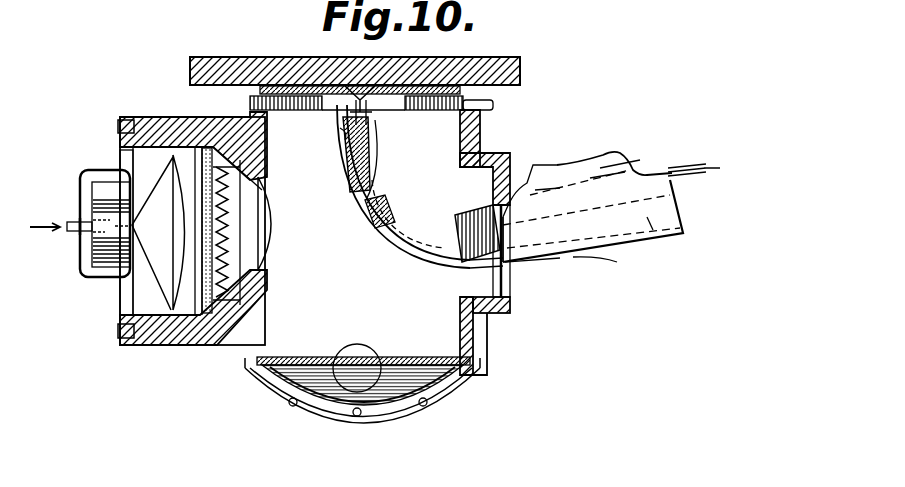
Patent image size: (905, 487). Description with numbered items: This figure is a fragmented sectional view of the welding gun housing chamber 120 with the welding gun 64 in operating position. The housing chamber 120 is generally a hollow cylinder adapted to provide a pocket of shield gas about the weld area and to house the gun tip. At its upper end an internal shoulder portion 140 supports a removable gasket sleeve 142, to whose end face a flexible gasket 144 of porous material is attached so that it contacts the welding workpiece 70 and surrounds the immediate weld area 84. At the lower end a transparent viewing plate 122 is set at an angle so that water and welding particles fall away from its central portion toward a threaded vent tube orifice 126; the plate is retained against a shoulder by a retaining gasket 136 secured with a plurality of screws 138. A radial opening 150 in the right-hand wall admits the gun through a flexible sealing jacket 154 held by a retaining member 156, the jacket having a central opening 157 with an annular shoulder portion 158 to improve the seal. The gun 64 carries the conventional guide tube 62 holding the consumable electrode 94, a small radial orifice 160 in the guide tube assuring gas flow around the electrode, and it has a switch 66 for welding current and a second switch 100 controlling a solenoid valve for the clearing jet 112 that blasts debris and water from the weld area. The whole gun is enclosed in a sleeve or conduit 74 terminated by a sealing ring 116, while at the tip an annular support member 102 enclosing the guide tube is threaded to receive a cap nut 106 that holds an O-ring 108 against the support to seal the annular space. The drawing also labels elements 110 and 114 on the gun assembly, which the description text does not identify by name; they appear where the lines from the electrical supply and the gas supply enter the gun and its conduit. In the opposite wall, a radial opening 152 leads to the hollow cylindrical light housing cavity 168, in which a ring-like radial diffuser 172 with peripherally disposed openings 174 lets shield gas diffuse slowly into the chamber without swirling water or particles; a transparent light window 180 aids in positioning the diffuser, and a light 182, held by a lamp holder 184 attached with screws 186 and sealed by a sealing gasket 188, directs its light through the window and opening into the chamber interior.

The welding workpiece 70 is at (355, 48).
The flexible gasket 144 is at (272, 88).
The weld area 84 is at (355, 92).
The gasket sleeve 142 is at (413, 112).
The internal shoulder portion 140 is at (254, 114).
The light housing cavity 168 is at (176, 346).
The sealing gasket 188 is at (132, 120).
The screws 186 is at (122, 123).
The lamp holder 184 is at (100, 178).
The light 182 is at (160, 190).
The transparent light window 180 is at (243, 272).
The radial diffuser 172 is at (232, 225).
The peripherally disposed openings 174 is at (235, 200).
The radial opening 152 is at (262, 280).
The transparent viewing plate 122 is at (400, 395).
The vent tube orifice 126 is at (360, 348).
The retaining gasket 136 is at (262, 390).
The screws 138 is at (428, 404).
The housing chamber 120 is at (480, 352).
The flexible sealing jacket 154 is at (505, 290).
The retaining member 156 is at (508, 310).
The annular shoulder portion 158 is at (505, 272).
The small radial orifice 160 is at (455, 272).
The guide tube 62 is at (372, 135).
The cap nut 106 is at (343, 135).
The O-ring 108 is at (387, 155).
The consumable electrode 94 is at (367, 118).
The clearing jet 112 is at (343, 137).
The sealing ring 116 is at (398, 212).
The annular support member 102 is at (470, 215).
The radial opening 150 is at (487, 168).
The opening 157 is at (522, 172).
The welding gun 64 is at (665, 242).
The sleeve or conduit 74 is at (630, 162).
The second switch 100 is at (603, 158).
The switch 66 is at (553, 170).
The conduit 110 is at (666, 165).
The conduit 114 is at (560, 262).